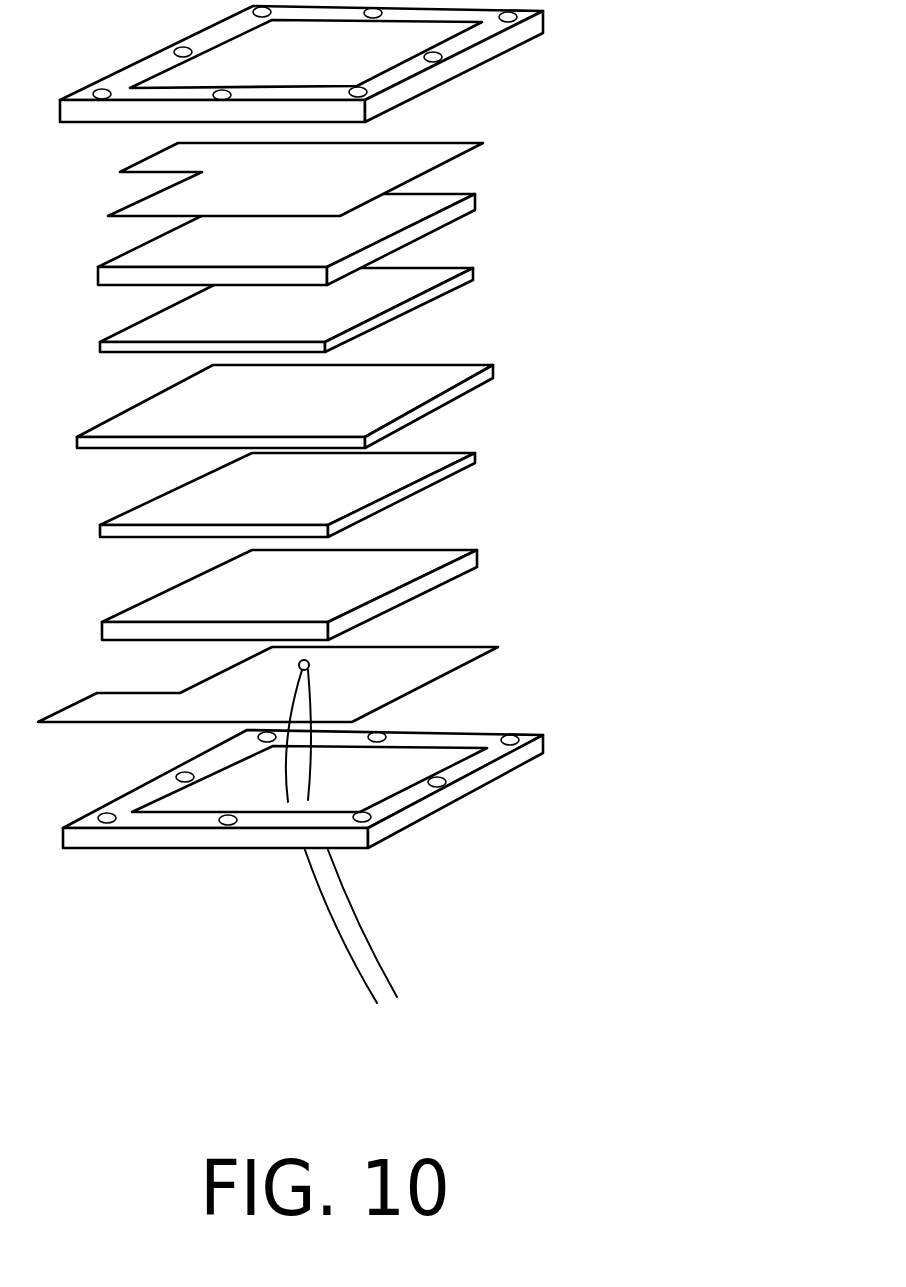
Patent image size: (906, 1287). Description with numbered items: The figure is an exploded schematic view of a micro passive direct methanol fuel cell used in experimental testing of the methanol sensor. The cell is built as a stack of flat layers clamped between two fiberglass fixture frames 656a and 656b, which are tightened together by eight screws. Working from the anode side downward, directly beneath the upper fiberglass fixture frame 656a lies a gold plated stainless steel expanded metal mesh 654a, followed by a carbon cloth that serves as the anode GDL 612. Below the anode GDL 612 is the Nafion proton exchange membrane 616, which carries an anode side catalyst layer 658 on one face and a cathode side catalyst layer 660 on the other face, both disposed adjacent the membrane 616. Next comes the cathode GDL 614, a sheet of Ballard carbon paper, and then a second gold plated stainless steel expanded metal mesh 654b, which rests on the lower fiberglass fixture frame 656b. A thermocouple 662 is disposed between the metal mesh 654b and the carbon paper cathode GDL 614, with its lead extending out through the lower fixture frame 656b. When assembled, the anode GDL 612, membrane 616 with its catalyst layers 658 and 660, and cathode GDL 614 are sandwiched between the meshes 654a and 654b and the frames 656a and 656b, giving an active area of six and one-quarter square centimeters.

The fiberglass fixture frame 656a is at (543, 11).
The gold plated stainless steel expanded mesh 654a is at (483, 143).
The anode GDL 612 is at (475, 197).
The anode side catalyst layer 658 is at (473, 272).
The proton exchange membrane 616 is at (495, 368).
The cathode side catalyst layer 660 is at (477, 456).
The cathode GDL 614 is at (477, 555).
The gold plated stainless steel expanded mesh 654b is at (498, 647).
The fiberglass fixture frame 656b is at (543, 742).
The thermocouple 662 is at (380, 963).